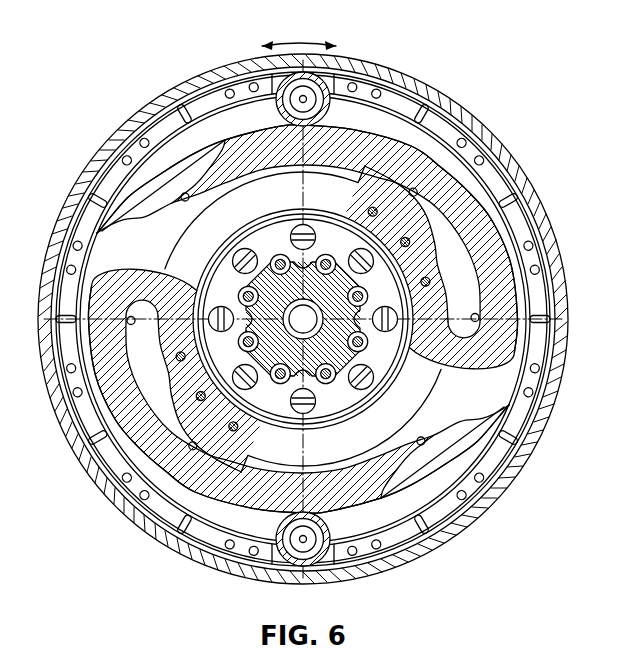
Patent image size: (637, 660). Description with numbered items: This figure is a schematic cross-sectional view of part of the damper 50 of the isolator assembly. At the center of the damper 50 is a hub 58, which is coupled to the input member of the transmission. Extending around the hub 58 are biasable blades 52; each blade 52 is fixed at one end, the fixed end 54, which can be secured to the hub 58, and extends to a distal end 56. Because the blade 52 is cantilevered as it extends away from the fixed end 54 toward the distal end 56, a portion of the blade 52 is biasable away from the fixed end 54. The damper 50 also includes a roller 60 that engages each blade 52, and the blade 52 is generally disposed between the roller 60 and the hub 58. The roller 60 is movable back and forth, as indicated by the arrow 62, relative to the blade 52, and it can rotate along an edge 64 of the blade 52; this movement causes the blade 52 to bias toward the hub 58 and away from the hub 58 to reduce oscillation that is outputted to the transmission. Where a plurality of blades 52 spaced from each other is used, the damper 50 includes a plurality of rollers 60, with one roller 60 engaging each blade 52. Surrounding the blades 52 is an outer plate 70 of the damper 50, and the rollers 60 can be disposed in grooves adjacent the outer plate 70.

The damper 50 is at (548, 62).
The blade 52 is at (497, 270).
The fixed end 54 is at (397, 225).
The distal end 56 is at (140, 197).
The hub 58 is at (355, 368).
The roller 60 is at (330, 92).
The arrow 62 is at (294, 30).
The edge 64 is at (407, 147).
The outer plate 70 is at (183, 112).